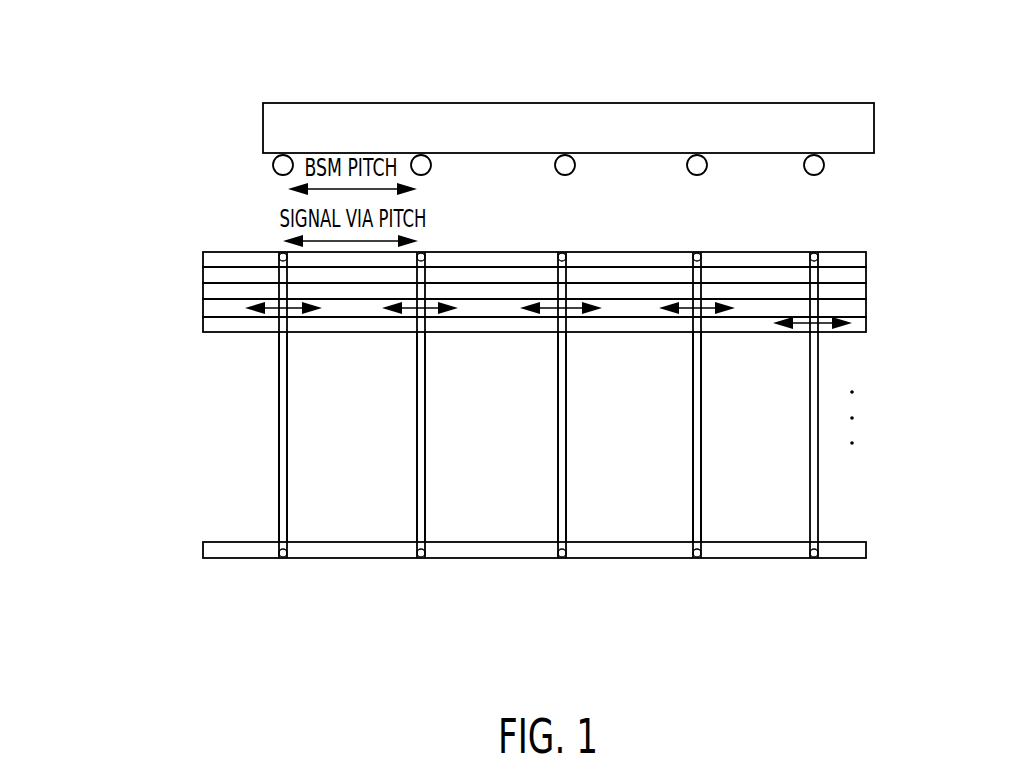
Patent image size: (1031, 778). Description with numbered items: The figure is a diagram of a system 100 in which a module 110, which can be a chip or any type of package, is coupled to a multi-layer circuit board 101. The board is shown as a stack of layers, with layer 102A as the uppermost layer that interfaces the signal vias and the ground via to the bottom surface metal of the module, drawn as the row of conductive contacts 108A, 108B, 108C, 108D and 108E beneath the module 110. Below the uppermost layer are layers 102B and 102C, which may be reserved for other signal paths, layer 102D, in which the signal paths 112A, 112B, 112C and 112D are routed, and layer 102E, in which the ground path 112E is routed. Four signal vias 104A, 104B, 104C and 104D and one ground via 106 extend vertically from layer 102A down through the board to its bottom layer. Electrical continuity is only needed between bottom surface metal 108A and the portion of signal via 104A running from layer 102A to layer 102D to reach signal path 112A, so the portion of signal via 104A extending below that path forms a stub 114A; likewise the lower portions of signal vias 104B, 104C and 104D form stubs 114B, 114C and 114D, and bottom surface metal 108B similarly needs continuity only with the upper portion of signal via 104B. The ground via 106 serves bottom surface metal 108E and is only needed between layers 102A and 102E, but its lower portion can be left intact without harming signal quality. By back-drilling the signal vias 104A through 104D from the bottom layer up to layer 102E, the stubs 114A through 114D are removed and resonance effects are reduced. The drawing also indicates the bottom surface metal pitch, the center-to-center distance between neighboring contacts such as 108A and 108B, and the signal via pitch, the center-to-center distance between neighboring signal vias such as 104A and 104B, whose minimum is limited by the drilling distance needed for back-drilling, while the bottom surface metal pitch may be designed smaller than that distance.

The system 100 is at (562, 90).
The multi-layer circuit board 101 is at (555, 420).
The layer 102A is at (238, 254).
The layer 102B is at (208, 275).
The layer 102C is at (208, 292).
The layer 102D is at (208, 308).
The layer 102E is at (208, 325).
The signal via 104A is at (282, 558).
The signal via 104B is at (420, 558).
The signal via 104C is at (561, 558).
The signal via 104D is at (696, 558).
The ground via 106 is at (813, 558).
The bottom surface metal 108A is at (276, 160).
The bottom surface metal 108B is at (429, 171).
The bottom surface metal 108C is at (573, 171).
The bottom surface metal 108D is at (705, 171).
The bottom surface metal 108E is at (822, 171).
The module 110 is at (868, 128).
The signal path 112A is at (273, 312).
The signal path 112B is at (413, 312).
The signal path 112C is at (553, 312).
The signal path 112D is at (687, 312).
The ground path 112E is at (807, 326).
The stub 114A is at (279, 419).
The stub 114B is at (417, 401).
The stub 114C is at (558, 402).
The stub 114D is at (693, 402).